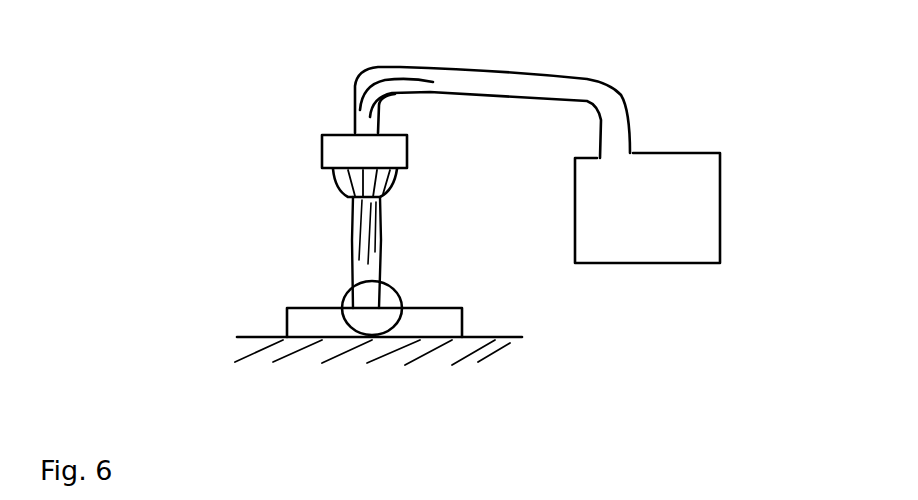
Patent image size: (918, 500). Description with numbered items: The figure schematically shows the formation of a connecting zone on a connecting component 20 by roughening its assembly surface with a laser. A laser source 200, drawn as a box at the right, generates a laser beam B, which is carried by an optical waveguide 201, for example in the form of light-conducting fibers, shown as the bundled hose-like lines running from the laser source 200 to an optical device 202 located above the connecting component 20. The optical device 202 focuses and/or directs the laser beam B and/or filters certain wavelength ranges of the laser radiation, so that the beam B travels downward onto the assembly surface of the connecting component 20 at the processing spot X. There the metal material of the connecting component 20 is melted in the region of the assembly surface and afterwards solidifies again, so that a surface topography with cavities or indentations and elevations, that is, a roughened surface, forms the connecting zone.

The connecting component 20 is at (457, 325).
The laser source 200 is at (647, 223).
The optical waveguide 201 is at (433, 63).
The optical device 202 is at (321, 156).
The laser beam B is at (351, 255).
The coating drop / application point X is at (342, 317).